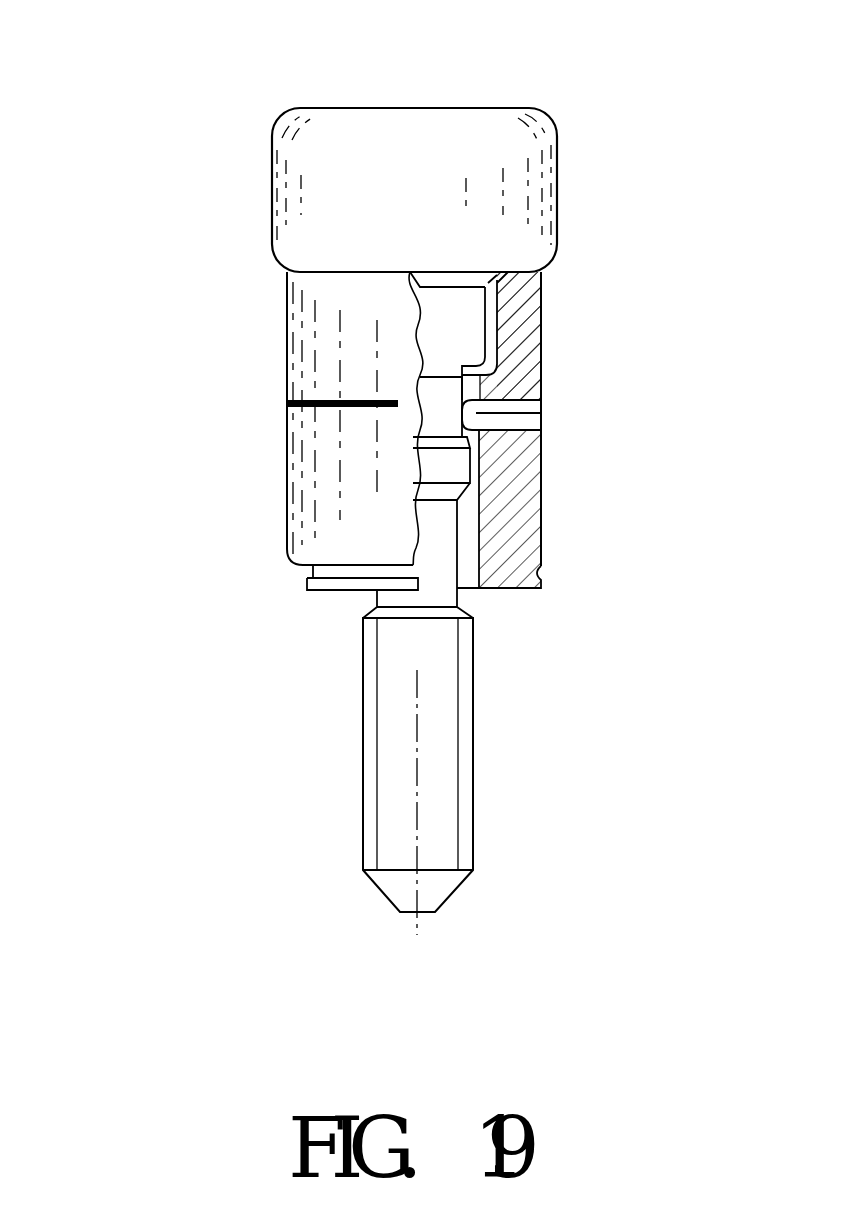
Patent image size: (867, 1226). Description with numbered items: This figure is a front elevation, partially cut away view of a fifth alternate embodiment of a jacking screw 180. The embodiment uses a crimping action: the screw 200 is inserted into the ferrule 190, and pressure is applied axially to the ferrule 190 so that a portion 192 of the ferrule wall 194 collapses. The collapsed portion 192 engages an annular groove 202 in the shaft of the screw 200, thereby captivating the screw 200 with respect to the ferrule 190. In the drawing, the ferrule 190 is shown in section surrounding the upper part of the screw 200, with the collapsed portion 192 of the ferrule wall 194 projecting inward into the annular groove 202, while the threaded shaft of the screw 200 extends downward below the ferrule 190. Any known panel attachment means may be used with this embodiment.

The jacking screw 180 is at (602, 126).
The ferrule 190 is at (542, 333).
The collapsed portion 192 is at (542, 413).
The ferrule wall 194 is at (517, 505).
The screw 200 is at (473, 743).
The annular groove 202 is at (438, 402).